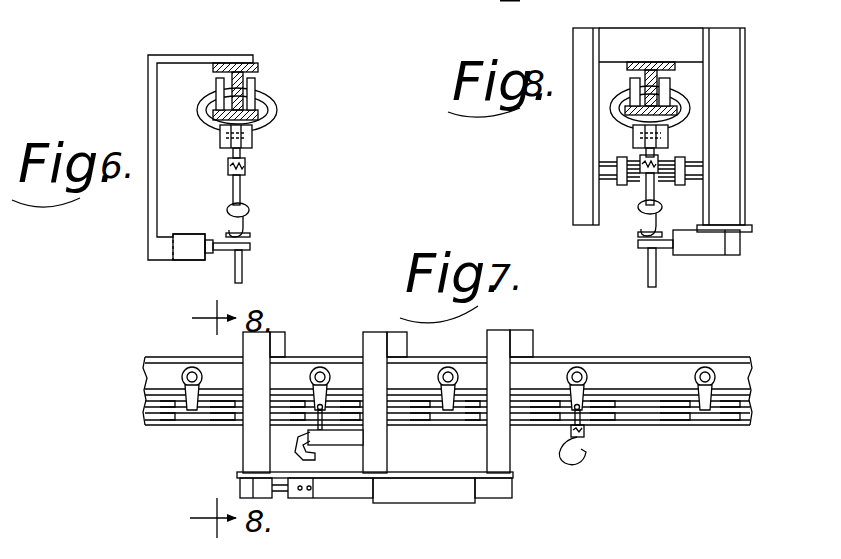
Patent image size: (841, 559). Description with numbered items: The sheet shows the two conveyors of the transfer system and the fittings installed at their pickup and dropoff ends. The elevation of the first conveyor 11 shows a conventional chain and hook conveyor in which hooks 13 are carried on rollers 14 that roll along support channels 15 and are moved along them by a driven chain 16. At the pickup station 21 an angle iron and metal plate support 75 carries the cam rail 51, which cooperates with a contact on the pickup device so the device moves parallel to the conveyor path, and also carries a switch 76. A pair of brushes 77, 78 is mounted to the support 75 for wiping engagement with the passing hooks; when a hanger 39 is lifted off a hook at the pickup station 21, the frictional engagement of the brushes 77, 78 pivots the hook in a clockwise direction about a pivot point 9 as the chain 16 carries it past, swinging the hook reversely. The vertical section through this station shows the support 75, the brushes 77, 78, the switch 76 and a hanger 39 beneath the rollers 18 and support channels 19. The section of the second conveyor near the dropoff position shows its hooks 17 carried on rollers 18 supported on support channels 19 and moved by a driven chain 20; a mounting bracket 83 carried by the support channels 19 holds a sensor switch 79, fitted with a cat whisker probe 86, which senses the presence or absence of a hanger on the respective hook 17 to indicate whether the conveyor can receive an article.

In FIG. 7, the pivot point 9 is at (322, 408).
In FIG. 7, the first moving conveyor 11 is at (466, 370).
In FIG. 7, the hooks 13 is at (587, 466).
In FIG. 7, the rollers 14 is at (580, 362).
In FIG. 7, the support channels 15 is at (640, 390).
In FIG. 7, the driven chain 16 is at (678, 397).
In FIG. 6, the hooks 17 is at (243, 185).
In FIG. 8, the hooks 17 is at (640, 195).
In FIG. 6, the rollers 18 is at (270, 96).
In FIG. 8, the rollers 18 is at (683, 92).
In FIG. 6, the support channels 19 is at (258, 67).
In FIG. 8, the support channels 19 is at (688, 60).
In FIG. 6, the driven chain 20 is at (246, 120).
In FIG. 8, the driven chain 20 is at (650, 136).
In FIG. 8, the pickup station 21 is at (690, 147).
In FIG. 7, the pickup station 21 is at (222, 441).
In FIG. 6, the hanger 39 is at (250, 213).
In FIG. 8, the hanger 39 is at (658, 270).
In FIG. 7, the cam rail 51 is at (364, 507).
In FIG. 8, the angle iron and metal plate support 75 is at (722, 110).
In FIG. 7, the angle iron and metal plate support 75 is at (503, 453).
In FIG. 8, the switch 76 is at (708, 250).
In FIG. 7, the switch 76 is at (243, 484).
In FIG. 8, the brush 77 is at (633, 187).
In FIG. 8, the brush 78 is at (665, 183).
In FIG. 7, the brush 78 is at (437, 438).
In FIG. 6, the sensor switch 79 is at (210, 236).
In FIG. 6, the mounting bracket 83 is at (148, 76).
In FIG. 6, the cat whisker probe 86 is at (250, 246).